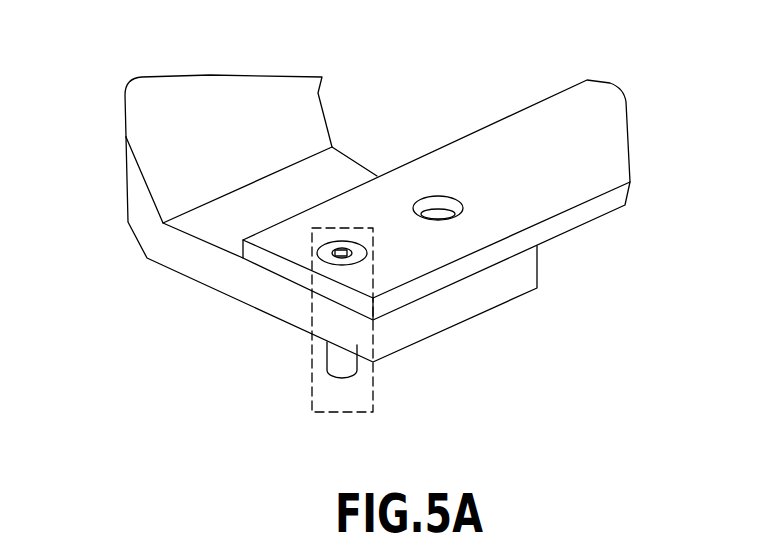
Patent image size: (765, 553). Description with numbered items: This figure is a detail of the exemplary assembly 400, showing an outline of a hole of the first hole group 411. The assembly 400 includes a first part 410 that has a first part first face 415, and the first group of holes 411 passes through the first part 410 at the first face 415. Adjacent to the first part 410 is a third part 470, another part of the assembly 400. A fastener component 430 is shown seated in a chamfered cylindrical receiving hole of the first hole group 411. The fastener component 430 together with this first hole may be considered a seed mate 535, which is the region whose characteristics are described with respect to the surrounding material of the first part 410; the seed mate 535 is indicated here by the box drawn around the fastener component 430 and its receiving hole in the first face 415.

The assembly 400 is at (158, 46).
The third part 470 is at (307, 103).
The first part first face 415 is at (572, 164).
The first part 410 is at (592, 210).
The first group of holes 411 is at (450, 228).
The fastener component 430 is at (333, 357).
The seed mate 535 is at (373, 380).